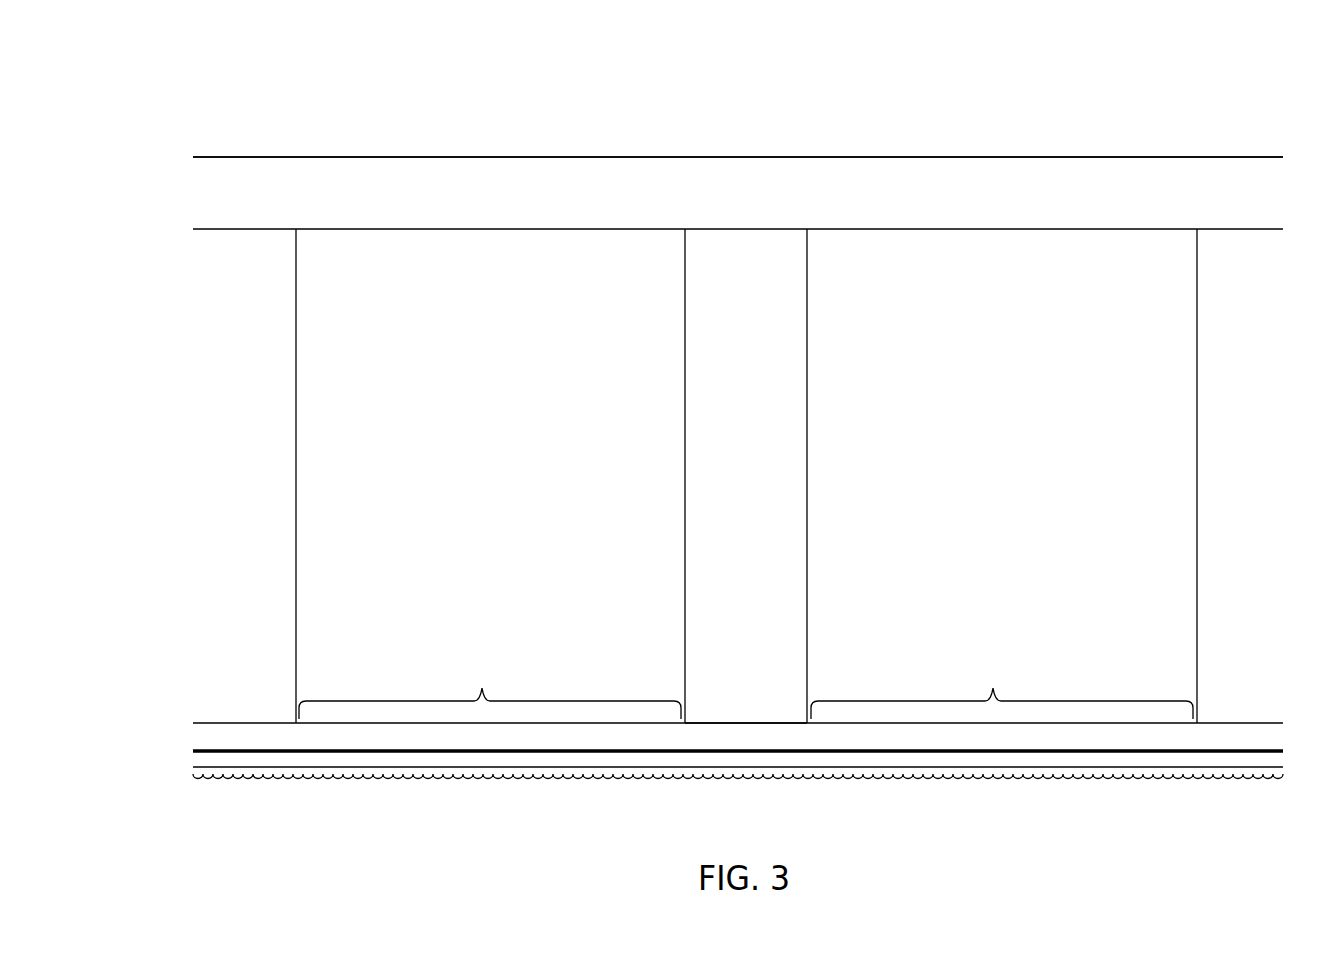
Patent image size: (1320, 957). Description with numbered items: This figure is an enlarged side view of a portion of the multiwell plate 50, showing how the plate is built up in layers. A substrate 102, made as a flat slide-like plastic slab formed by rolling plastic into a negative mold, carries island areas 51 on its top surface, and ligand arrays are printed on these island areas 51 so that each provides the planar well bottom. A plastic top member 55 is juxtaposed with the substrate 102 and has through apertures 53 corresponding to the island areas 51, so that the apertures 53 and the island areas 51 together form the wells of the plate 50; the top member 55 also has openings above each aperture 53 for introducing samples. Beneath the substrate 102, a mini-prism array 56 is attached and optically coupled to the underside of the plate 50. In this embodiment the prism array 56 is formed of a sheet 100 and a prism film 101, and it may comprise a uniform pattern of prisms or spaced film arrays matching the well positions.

The multiwell plate 50 is at (908, 126).
The top member 55 is at (630, 190).
The through aperture 53 is at (474, 337).
The island area 51 is at (746, 689).
The substrate 102 is at (748, 737).
The sheet 100 is at (353, 759).
The prism film 101 is at (430, 770).
The prism array 56 is at (462, 745).